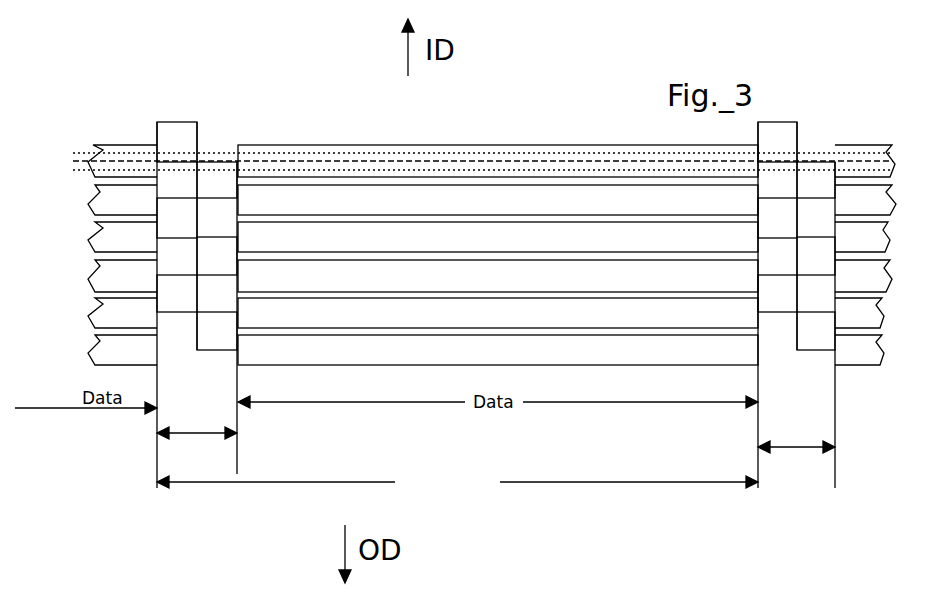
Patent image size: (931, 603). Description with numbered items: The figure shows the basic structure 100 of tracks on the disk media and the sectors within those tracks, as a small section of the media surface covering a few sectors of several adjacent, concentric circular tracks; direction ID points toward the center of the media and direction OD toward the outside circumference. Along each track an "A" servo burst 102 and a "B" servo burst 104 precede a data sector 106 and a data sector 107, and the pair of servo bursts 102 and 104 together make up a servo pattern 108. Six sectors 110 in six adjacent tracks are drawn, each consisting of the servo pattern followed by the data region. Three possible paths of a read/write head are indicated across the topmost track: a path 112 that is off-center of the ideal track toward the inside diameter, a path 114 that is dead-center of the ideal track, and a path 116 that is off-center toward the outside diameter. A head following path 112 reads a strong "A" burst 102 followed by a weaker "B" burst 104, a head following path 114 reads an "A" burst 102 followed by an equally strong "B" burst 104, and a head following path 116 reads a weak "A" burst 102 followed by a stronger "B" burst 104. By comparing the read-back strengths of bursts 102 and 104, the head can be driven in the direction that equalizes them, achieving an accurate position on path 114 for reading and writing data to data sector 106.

The basic structure 100 is at (148, 66).
The "A" servo burst 102 is at (183, 135).
The "B" servo burst 104 is at (207, 177).
The data sector 106 is at (447, 158).
The data sector 107 is at (522, 190).
The servo pattern 108 is at (190, 437).
The sector 110 is at (537, 482).
The path 112 is at (283, 151).
The path 114 is at (323, 160).
The path 116 is at (370, 170).